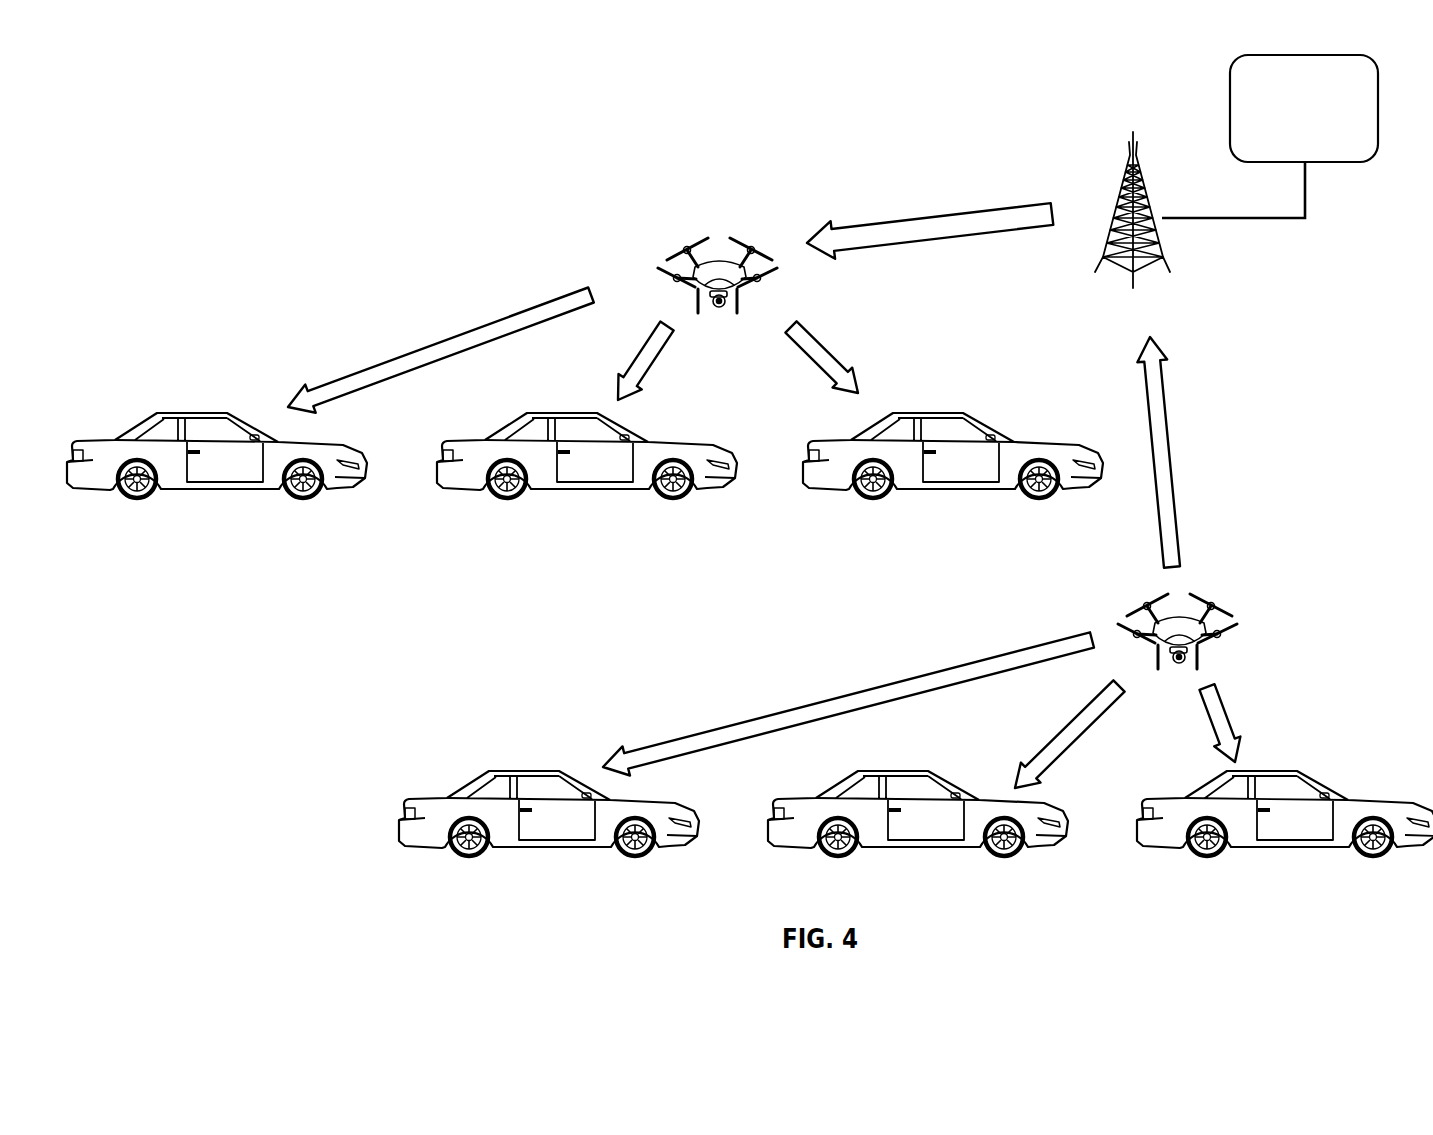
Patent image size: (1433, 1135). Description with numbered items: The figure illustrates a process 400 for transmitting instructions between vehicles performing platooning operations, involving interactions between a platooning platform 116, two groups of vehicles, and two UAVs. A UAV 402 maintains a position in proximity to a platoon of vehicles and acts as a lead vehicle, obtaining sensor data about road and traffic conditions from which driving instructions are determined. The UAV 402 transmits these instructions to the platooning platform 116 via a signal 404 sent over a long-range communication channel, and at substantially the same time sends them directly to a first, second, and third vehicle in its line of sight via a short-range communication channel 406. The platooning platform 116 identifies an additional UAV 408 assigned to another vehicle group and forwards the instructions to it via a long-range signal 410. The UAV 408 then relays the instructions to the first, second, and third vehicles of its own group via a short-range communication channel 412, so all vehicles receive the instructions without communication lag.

The process 400 is at (375, 145).
The UAV 402 is at (1237, 615).
The signal 404 is at (1174, 452).
The short-range communication channel 406 is at (951, 710).
The additional UAV 408 is at (735, 232).
The long-range signal 410 is at (930, 223).
The short-range communication channel 412 is at (589, 350).
The platooning platform 116 is at (1270, 136).